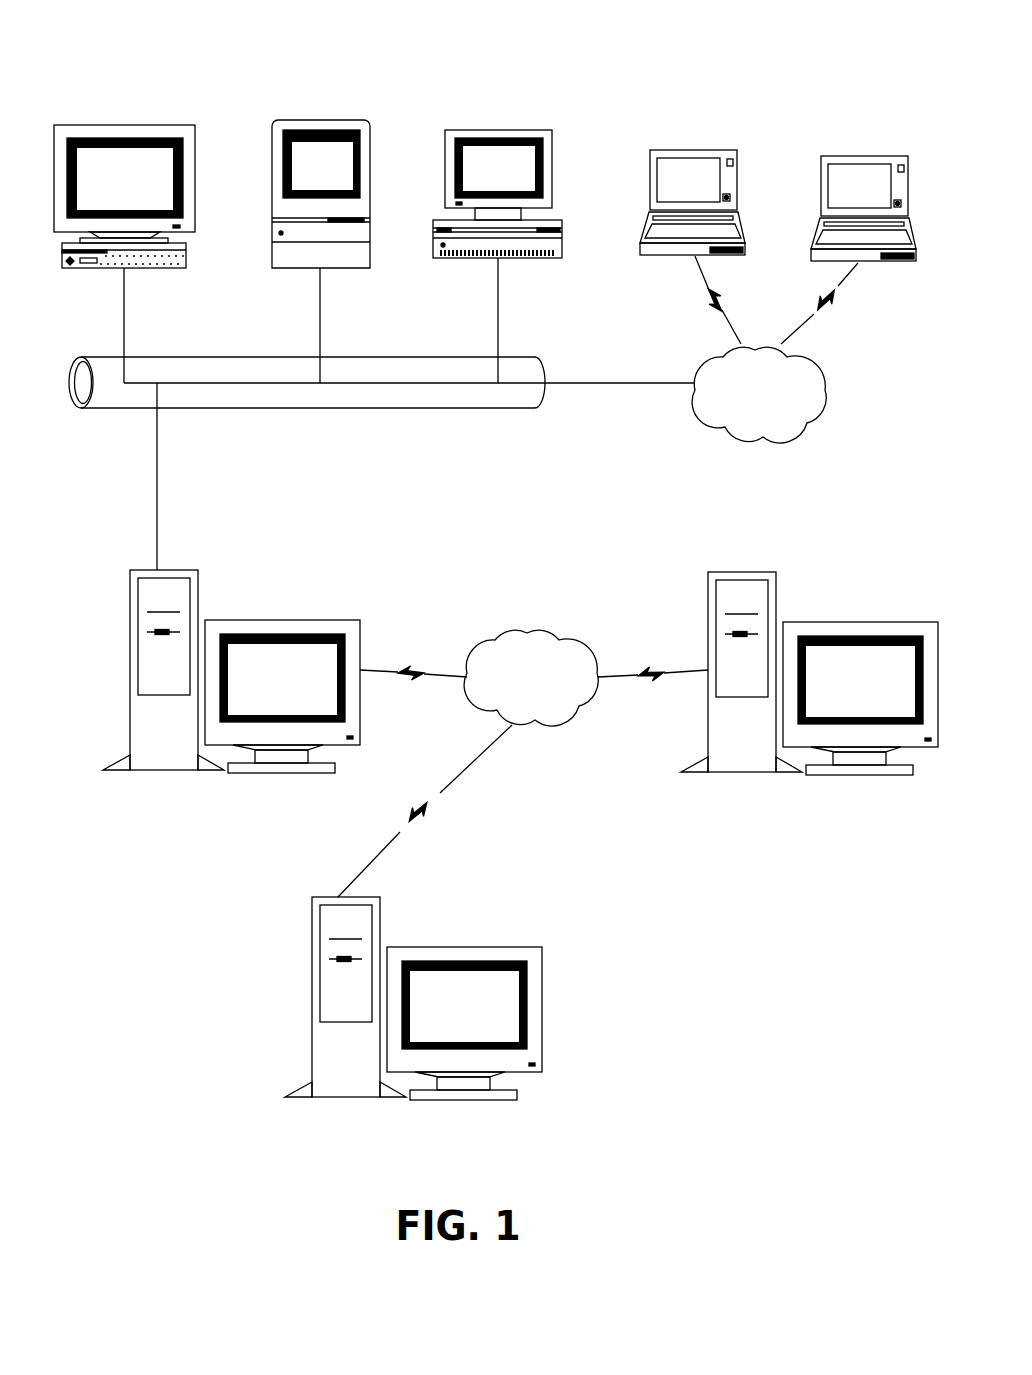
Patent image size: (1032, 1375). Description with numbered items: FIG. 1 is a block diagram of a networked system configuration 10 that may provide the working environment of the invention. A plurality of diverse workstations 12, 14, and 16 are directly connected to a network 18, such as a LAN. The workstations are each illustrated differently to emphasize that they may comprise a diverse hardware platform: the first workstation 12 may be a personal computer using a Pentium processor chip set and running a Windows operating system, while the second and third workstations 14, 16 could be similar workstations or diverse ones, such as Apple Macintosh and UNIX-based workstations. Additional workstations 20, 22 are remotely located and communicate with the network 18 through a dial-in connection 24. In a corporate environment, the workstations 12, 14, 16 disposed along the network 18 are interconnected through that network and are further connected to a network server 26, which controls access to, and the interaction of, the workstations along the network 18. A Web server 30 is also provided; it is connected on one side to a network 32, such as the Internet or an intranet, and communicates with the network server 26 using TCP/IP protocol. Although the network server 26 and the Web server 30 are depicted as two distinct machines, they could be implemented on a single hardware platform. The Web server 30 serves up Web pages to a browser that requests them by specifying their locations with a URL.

The networked system configuration 10 is at (612, 30).
The first workstation 12 is at (195, 170).
The second workstation 14 is at (370, 182).
The third workstation 16 is at (552, 186).
The network 18 is at (440, 410).
The additional workstation 20 is at (737, 190).
The additional workstation 22 is at (820, 180).
The dial-in connection 24 is at (743, 437).
The network server 26 is at (222, 598).
The Web server 30 is at (792, 598).
The network 32 is at (512, 628).